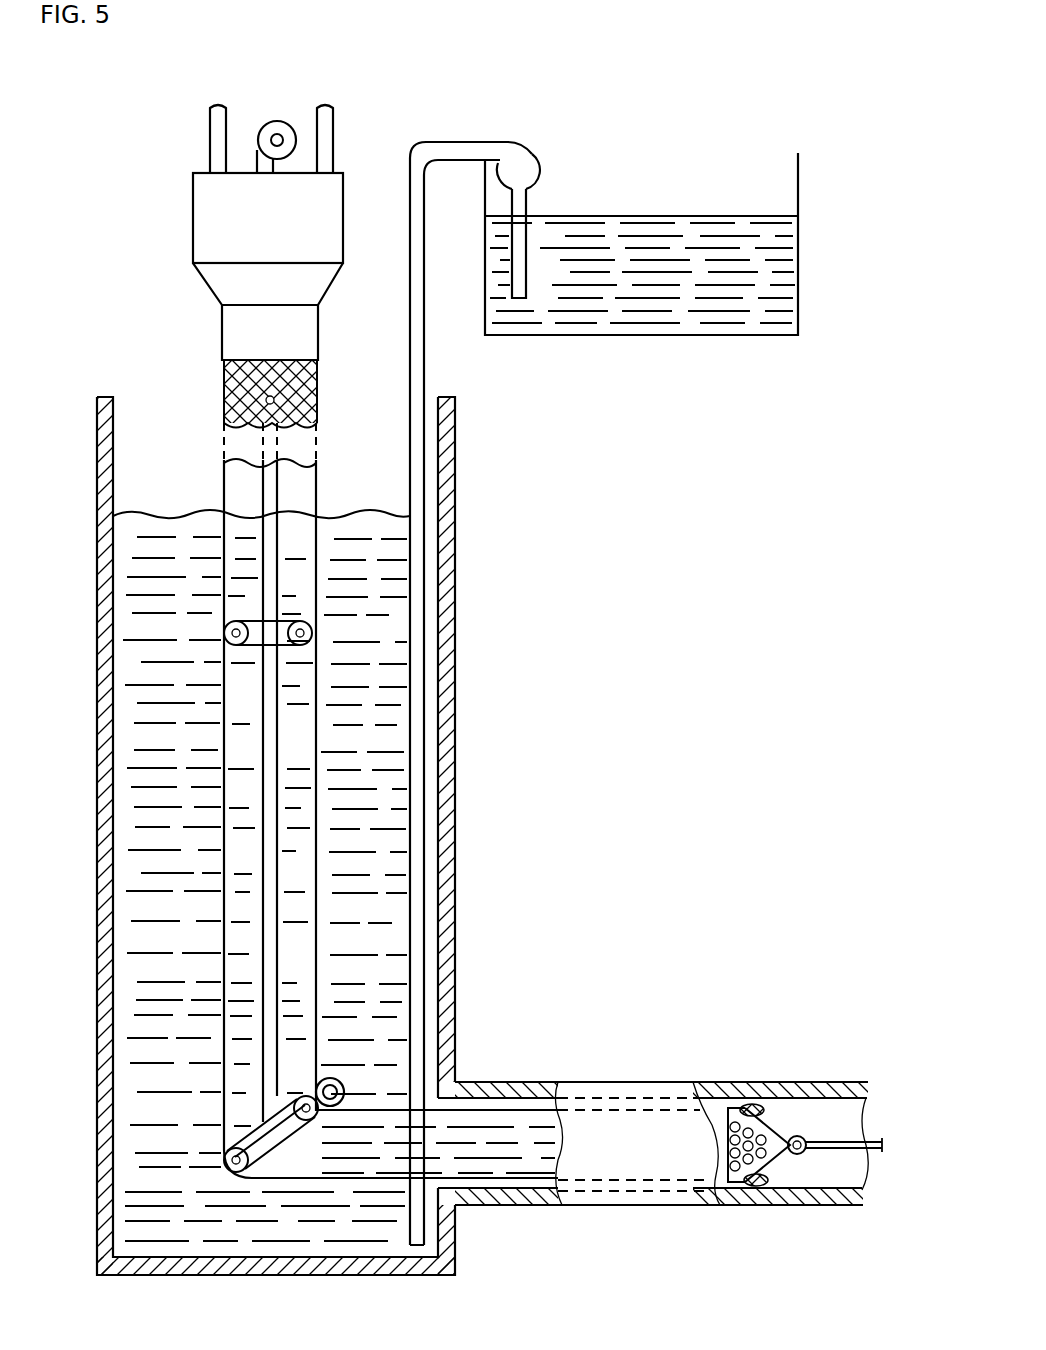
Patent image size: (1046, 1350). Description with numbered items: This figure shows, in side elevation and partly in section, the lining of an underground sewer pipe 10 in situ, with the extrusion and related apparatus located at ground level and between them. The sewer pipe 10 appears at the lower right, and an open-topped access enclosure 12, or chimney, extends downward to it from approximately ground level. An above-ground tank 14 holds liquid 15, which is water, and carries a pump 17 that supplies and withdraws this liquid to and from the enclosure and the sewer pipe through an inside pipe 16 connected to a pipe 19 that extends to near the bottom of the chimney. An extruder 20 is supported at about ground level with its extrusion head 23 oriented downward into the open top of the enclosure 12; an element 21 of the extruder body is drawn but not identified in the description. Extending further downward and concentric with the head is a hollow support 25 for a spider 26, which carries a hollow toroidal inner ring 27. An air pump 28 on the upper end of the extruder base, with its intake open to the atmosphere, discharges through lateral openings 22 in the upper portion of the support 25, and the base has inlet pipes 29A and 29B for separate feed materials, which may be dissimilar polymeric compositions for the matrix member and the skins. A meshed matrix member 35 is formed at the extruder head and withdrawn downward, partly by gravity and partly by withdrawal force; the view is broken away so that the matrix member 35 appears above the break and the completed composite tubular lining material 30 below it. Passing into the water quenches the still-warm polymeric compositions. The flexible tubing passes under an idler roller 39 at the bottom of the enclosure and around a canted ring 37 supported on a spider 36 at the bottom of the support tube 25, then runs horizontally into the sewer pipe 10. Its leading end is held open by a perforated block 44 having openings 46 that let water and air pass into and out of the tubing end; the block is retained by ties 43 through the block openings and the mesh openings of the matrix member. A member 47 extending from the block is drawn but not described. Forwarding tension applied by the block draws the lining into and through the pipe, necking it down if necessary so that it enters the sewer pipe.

The sewer pipe 10 is at (645, 1073).
The access enclosure 12 is at (93, 460).
The tank 14 is at (488, 287).
The liquid 15 is at (132, 608).
The inside pipe 16 is at (516, 302).
The pump 17 is at (524, 150).
The pipe 19 is at (426, 292).
The extruder 20 is at (192, 290).
The housing 21 is at (205, 216).
The lateral openings 22 is at (264, 381).
The extrusion head 23 is at (240, 329).
The hollow support 25 is at (268, 549).
The spider 26 is at (286, 622).
The hollow toroidal inner ring 27 is at (305, 646).
The air pump 28 is at (260, 135).
The inlet pipe 29A is at (212, 136).
The inlet pipe 29B is at (333, 140).
The composite tubular lining material 30 is at (310, 492).
The meshed matrix member 35 is at (306, 406).
The spider 36 is at (266, 1158).
The canted ring 37 is at (313, 1124).
The idler roller 39 is at (333, 1078).
The ties 43 is at (792, 1108).
The perforated block 44 is at (736, 1156).
The openings 46 is at (799, 1130).
The rod 47 is at (871, 1142).